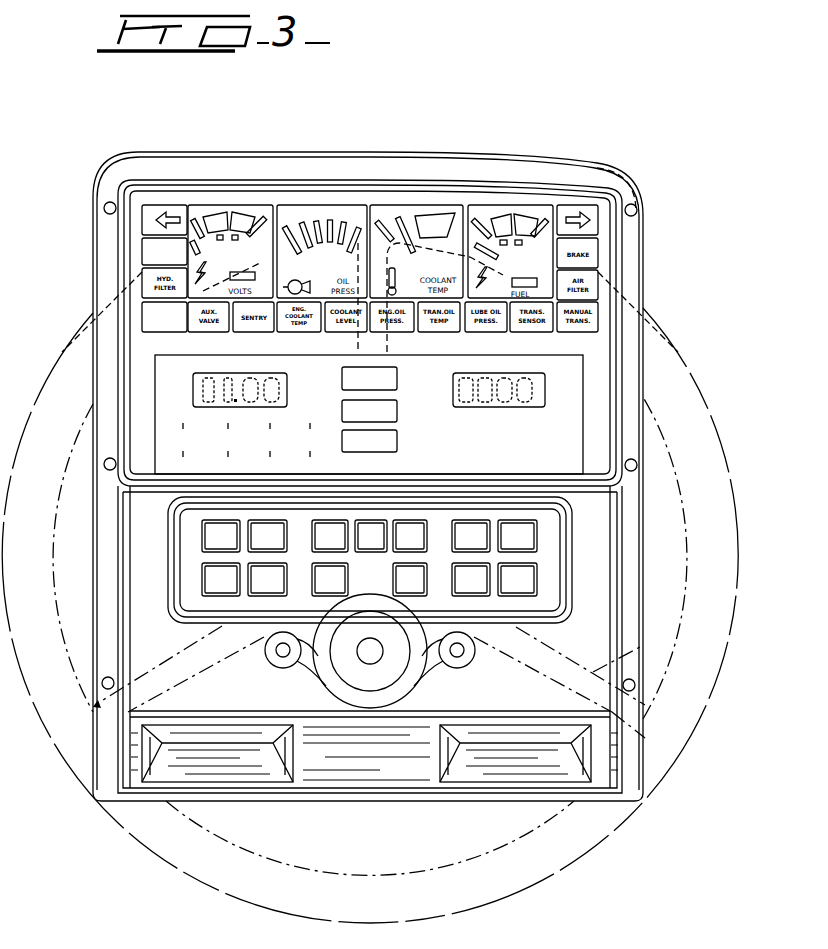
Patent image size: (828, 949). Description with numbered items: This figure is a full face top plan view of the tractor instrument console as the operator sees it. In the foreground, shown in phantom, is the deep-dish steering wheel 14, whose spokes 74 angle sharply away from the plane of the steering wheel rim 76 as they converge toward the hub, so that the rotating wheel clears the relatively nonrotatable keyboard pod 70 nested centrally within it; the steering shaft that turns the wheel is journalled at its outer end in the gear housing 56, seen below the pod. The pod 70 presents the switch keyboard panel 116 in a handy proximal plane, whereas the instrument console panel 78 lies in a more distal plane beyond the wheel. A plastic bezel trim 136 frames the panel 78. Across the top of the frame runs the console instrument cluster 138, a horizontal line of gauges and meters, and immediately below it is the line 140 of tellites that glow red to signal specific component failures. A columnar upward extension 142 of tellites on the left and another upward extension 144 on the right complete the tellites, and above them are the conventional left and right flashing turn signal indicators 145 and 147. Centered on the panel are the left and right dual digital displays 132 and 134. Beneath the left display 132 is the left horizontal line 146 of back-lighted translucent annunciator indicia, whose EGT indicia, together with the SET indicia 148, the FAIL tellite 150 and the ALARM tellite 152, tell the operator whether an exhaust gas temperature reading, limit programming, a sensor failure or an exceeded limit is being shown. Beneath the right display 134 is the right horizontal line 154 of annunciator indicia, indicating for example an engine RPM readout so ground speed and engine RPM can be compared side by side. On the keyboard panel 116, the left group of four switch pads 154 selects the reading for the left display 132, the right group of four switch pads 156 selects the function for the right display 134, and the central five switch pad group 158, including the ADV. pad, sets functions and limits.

The steering wheel 14 is at (306, 860).
The gear housing 56 is at (413, 695).
The keyboard pod 70 is at (572, 548).
The spokes 74 is at (640, 647).
The steering wheel rim 76 is at (660, 782).
The instrument console panel 78 is at (157, 345).
The switch keyboard panel 116 is at (193, 563).
The left digital display 132 is at (193, 393).
The right digital display 134 is at (545, 397).
The plastic bezel trim 136 is at (637, 283).
The console instrument cluster 138 is at (497, 205).
The line of tellites 140 is at (142, 313).
The columnar upward extension of tellites 142 is at (142, 263).
The upward extension of tellites 144 is at (600, 257).
The left turn signal indicator 145 is at (145, 208).
The left horizontal line of annunciator indicia 146 is at (315, 445).
The right turn signal indicator 147 is at (595, 208).
The SET indicia 148 is at (397, 440).
The FAIL tellite 150 is at (420, 403).
The ALARM tellite 152 is at (397, 380).
The right horizontal line of annunciator indicia / left group of switch pads 154 is at (291, 517).
The right group of four switch pads 156 is at (458, 517).
The five switch pad group 158 is at (380, 579).